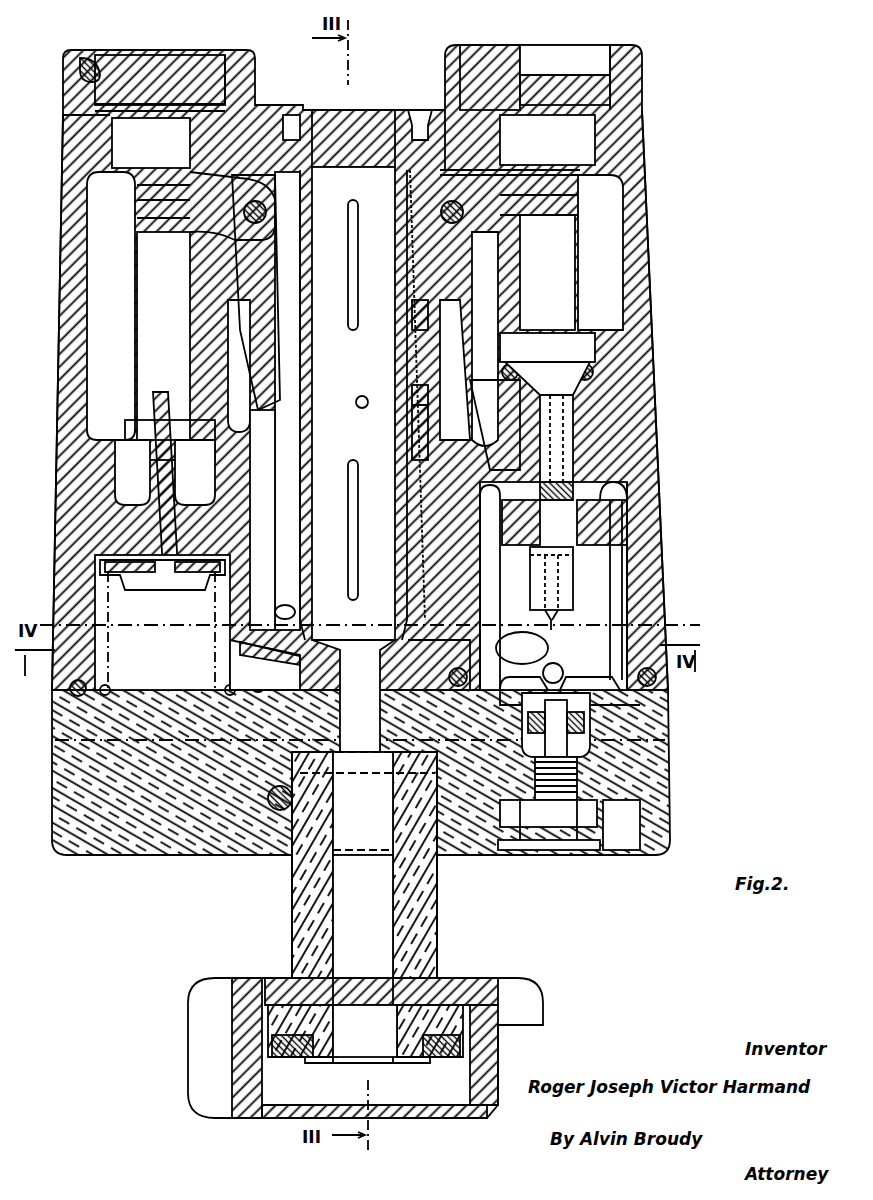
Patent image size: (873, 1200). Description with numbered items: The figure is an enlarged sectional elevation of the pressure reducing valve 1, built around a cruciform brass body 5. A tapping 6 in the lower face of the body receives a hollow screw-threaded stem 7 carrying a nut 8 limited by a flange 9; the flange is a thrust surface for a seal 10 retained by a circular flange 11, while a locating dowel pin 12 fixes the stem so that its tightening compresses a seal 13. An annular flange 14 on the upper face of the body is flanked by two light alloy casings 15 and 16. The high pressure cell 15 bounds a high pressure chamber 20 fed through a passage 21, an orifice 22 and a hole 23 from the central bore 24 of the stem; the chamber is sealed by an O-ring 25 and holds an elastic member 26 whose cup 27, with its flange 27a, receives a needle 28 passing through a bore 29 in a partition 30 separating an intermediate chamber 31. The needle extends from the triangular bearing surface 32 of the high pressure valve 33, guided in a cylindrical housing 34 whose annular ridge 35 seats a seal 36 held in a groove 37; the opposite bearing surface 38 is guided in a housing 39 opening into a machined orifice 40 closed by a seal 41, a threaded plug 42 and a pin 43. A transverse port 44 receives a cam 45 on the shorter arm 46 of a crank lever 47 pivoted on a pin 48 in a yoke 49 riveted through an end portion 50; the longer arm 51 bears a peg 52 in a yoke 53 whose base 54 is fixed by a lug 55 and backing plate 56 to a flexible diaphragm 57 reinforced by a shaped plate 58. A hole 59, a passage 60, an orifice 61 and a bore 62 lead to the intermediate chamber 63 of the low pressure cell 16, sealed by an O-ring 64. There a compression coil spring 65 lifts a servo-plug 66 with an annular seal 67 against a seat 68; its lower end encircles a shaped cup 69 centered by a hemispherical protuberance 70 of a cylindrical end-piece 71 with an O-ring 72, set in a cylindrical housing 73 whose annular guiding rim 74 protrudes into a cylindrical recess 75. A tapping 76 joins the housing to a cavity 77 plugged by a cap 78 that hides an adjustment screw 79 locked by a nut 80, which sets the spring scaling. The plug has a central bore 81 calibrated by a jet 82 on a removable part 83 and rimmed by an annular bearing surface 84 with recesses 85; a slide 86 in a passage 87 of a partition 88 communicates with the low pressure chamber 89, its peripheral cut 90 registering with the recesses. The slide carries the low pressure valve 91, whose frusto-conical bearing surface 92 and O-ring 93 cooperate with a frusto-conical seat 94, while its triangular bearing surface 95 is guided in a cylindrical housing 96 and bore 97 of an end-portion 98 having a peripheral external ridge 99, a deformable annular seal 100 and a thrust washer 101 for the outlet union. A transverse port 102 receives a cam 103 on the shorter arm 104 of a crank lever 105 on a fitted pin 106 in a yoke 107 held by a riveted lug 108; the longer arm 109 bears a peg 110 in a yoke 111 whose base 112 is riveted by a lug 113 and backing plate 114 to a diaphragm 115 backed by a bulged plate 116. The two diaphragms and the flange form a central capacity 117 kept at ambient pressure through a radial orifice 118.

The pressure reducing valve 1 is at (80, 868).
The cruciform body 5 is at (142, 856).
The tapping 6 is at (292, 812).
The hollow screw-threaded stem 7 is at (426, 922).
The nut 8 is at (250, 978).
The flange 9 is at (456, 1000).
The seal 10 is at (446, 1057).
The circular flange 11 is at (310, 1065).
The locating dowel pin 12 is at (276, 808).
The seal 13 is at (367, 803).
The annular flange 14 is at (323, 122).
The casing 15 is at (62, 196).
The casing 16 is at (652, 222).
The high pressure chamber 20 is at (162, 622).
The passage 21 is at (242, 656).
The orifice 22 is at (345, 622).
The hole 23 is at (360, 717).
The central bore 24 is at (363, 956).
The O-ring 25 is at (72, 690).
The elastic member 26 is at (110, 686).
The cup 27 is at (140, 582).
The cup flange 27a is at (175, 606).
The needle 28 is at (130, 557).
The bore 29 is at (197, 557).
The partition 30 is at (86, 448).
The intermediate chamber 31 is at (111, 306).
The triangular bearing surface 32 is at (200, 386).
The high pressure valve 33 is at (163, 336).
The cylindrical housing 34 is at (125, 438).
The annular ridge 35 is at (182, 470).
The seal 36 is at (145, 462).
The groove 37 is at (156, 420).
The triangular bearing surface 38 is at (151, 143).
The wall 39 is at (102, 142).
The machined orifice 40 is at (216, 62).
The seal 41 is at (176, 104).
The threaded plug 42 is at (125, 56).
The pin 43 is at (88, 58).
The transverse port 44 is at (137, 222).
The cam 45 is at (137, 200).
The shorter arm 46 is at (218, 210).
The crank lever 47 is at (220, 242).
The pin 48 is at (236, 268).
The yoke 49 is at (302, 194).
The end portion 50 is at (289, 115).
The longer arm 51 is at (248, 318).
The peg 52 is at (278, 446).
The yoke 53 is at (232, 408).
The base 54 is at (286, 468).
The lug 55 is at (322, 394).
The backing plate 56 is at (306, 432).
The flexible diaphragm 57 is at (300, 499).
The shaped plate 58 is at (311, 524).
The hole 59 is at (283, 604).
The passage 60 is at (336, 592).
The orifice 61 is at (382, 597).
The bore 62 is at (442, 620).
The intermediate chamber 63 is at (553, 586).
The O-ring 64 is at (640, 702).
The compression coil spring 65 is at (630, 640).
The servo-plug 66 is at (627, 530).
The annular seal 67 is at (622, 510).
The seat 68 is at (627, 488).
The shaped cup 69 is at (636, 718).
The hemispherical protuberance 70 is at (558, 661).
The cylindrical end-piece 71 is at (645, 742).
The sealing O-ring 72 is at (630, 766).
The cylindrical housing 73 is at (622, 790).
The annular guiding rim 74 is at (545, 725).
The cylindrical recess 75 is at (520, 722).
The tapping 76 is at (535, 782).
The cavity 77 is at (620, 830).
The cap 78 is at (592, 855).
The adjustment screw 79 is at (510, 852).
The nut 80 is at (560, 830).
The central bore 81 is at (540, 520).
The restrictor or jet 82 is at (605, 570).
The removable part 83 is at (573, 600).
The annular bearing surface 84 is at (540, 490).
The recesses 85 is at (540, 506).
The slide 86 is at (600, 430).
The passage 87 is at (590, 465).
The partition 88 is at (500, 440).
The low pressure chamber 89 is at (600, 252).
The peripheral cut 90 is at (574, 394).
The low pressure valve 91 is at (547, 272).
The frusto-conical bearing surface 92 is at (546, 342).
The O-ring 93 is at (588, 364).
The frusto-conical seat 94 is at (608, 404).
The triangular bearing surface 95 is at (547, 140).
The cylindrical housing 96 is at (468, 116).
The bore 97 is at (486, 56).
The end-portion 98 is at (640, 80).
The peripheral external ridge 99 is at (640, 56).
The deformable annular seal 100 is at (502, 78).
The thrust washer 101 is at (500, 98).
The transverse port 102 is at (566, 216).
The cam 103 is at (566, 196).
The shorter arm 104 is at (484, 236).
The crank lever 105 is at (510, 264).
The fitted pin 106 is at (442, 212).
The yoke 107 is at (412, 182).
The riveted lug 108 is at (402, 126).
The longer arm 109 is at (462, 298).
The peg 110 is at (456, 374).
The yoke 111 is at (483, 384).
The base 112 is at (418, 398).
The lug 113 is at (418, 420).
The backing plate 114 is at (410, 350).
The diaphragm 115 is at (405, 590).
The bulged plate 116 is at (412, 258).
The central capacity 117 is at (340, 265).
The radial orifice 118 is at (370, 383).